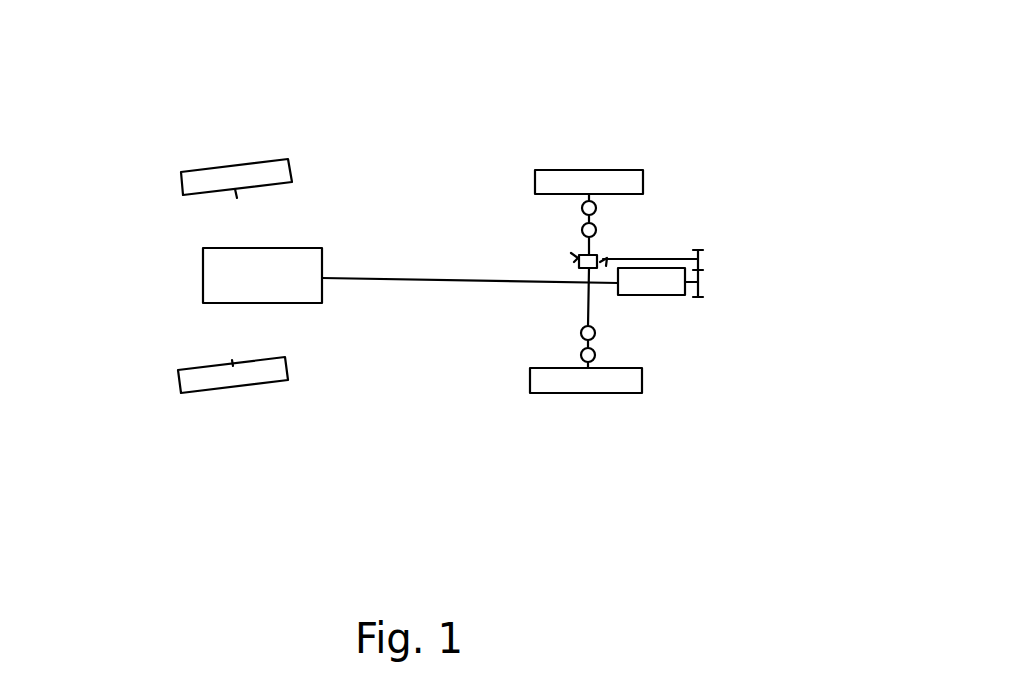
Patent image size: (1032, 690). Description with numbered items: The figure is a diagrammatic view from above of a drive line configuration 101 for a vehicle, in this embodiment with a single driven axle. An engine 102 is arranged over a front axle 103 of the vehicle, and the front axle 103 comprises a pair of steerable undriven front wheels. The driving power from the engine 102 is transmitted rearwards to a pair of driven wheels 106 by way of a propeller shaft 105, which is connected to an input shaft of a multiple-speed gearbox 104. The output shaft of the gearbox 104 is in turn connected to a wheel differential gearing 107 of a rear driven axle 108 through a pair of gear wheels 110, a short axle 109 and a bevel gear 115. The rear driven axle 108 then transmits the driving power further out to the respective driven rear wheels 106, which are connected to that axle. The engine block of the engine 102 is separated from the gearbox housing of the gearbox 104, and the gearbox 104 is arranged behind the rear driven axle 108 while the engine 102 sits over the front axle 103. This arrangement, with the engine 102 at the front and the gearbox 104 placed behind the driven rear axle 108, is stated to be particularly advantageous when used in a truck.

The drive line configuration 101 is at (205, 95).
The engine 102 is at (297, 303).
The front axle 103 is at (225, 196).
The multiple-speed gearbox 104 is at (663, 297).
The propeller shaft 105 is at (443, 275).
The driven wheels 106 is at (557, 362).
The wheel differential gearing 107 is at (598, 258).
The rear driven axle 108 is at (583, 310).
The short axle 109 is at (657, 260).
The pair of gear wheels 110 is at (707, 263).
The bevel gear 115 is at (602, 258).